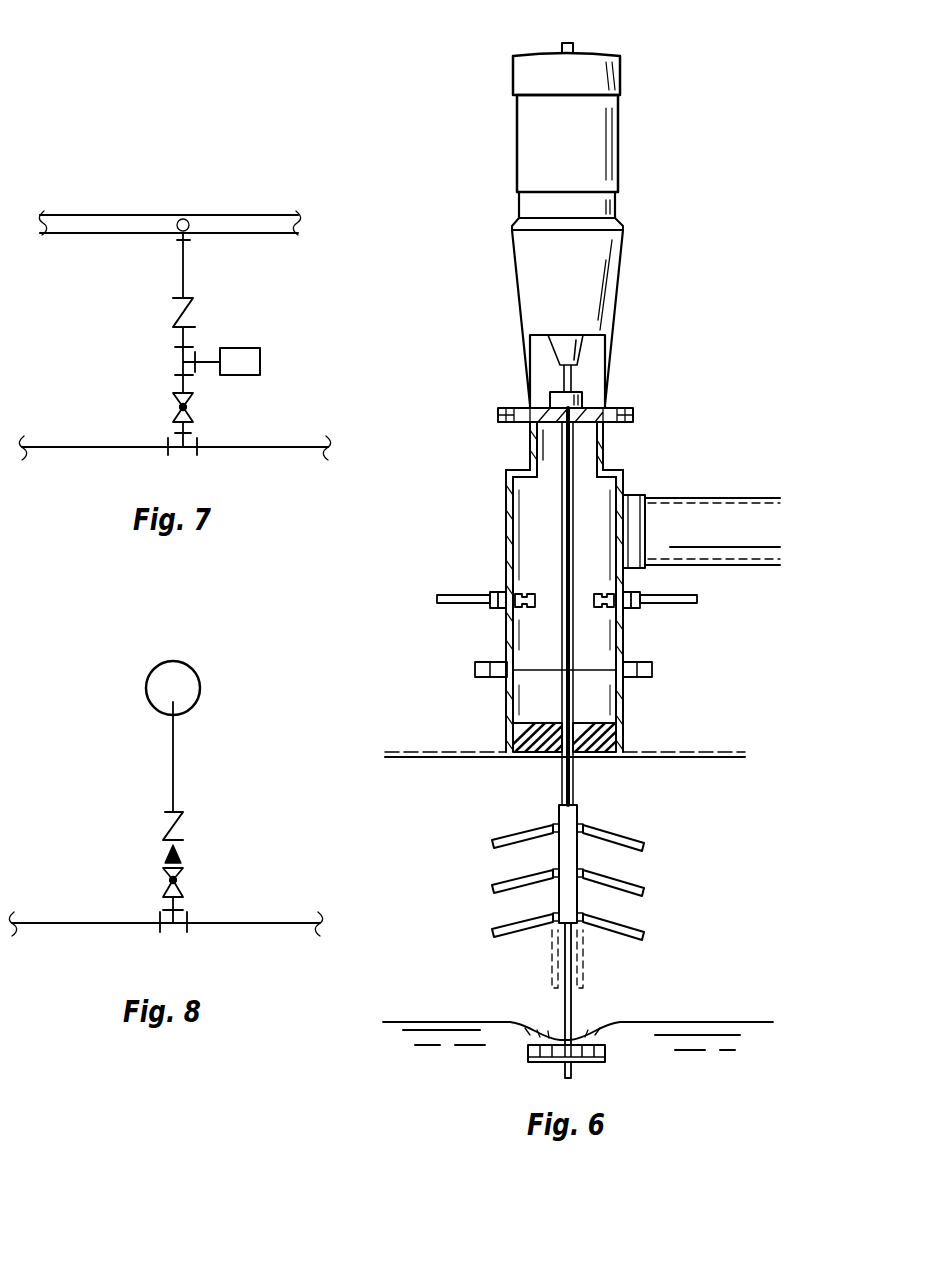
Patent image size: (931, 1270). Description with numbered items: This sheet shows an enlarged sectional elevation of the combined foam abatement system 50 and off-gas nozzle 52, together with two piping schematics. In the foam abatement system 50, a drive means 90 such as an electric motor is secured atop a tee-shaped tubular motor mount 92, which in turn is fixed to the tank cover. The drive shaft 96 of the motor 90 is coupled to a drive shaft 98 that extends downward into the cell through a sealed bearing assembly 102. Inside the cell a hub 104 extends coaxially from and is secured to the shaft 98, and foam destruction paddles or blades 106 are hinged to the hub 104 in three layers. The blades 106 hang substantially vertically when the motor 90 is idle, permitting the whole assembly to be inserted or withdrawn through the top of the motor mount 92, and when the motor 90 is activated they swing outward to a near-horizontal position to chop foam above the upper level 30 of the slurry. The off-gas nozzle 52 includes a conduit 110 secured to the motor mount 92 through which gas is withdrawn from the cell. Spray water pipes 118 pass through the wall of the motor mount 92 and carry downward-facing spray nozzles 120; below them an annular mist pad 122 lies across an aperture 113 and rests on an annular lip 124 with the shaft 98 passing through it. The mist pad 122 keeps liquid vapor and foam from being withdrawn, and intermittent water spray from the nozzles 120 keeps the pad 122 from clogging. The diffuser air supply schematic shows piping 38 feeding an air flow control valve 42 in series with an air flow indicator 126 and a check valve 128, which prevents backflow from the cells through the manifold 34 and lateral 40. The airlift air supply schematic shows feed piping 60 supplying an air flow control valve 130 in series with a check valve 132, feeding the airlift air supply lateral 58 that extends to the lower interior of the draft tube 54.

In FIG. 6, the upper level of the slurry 30 is at (680, 1022).
In FIG. 7, the manifold 34 is at (105, 233).
In FIG. 7, the air supply piping 38 is at (80, 447).
In FIG. 7, the lateral 40 is at (183, 262).
In FIG. 7, the air flow control valve 42 is at (178, 403).
In FIG. 6, the foam abatement system 50 is at (498, 308).
In FIG. 6, the off-gas nozzle 52 is at (740, 512).
In FIG. 8, the draft tube 54 is at (145, 688).
In FIG. 8, the airlift air supply lateral 58 is at (173, 770).
In FIG. 8, the air supply piping 60 is at (72, 923).
In FIG. 6, the drive means 90 is at (620, 238).
In FIG. 6, the tee-shaped tubular motor mount 92 is at (623, 470).
In FIG. 6, the drive shaft of motor 96 is at (572, 373).
In FIG. 6, the drive shaft 98 is at (575, 782).
In FIG. 6, the sealed bearing assembly 102 is at (533, 402).
In FIG. 6, the hub 104 is at (555, 858).
In FIG. 6, the foam destruction blades 106 is at (640, 928).
In FIG. 6, the conduit 110 is at (636, 496).
In FIG. 6, the aperture 113 is at (545, 757).
In FIG. 6, the spray water pipes 118 is at (445, 604).
In FIG. 6, the spray nozzles 120 is at (530, 595).
In FIG. 6, the annular mist pad 122 is at (560, 760).
In FIG. 6, the annular lip 124 is at (612, 757).
In FIG. 7, the air flow indicator 126 is at (240, 348).
In FIG. 7, the check valve 128 is at (176, 312).
In FIG. 8, the air flow control valve 130 is at (172, 880).
In FIG. 8, the check valve 132 is at (168, 830).